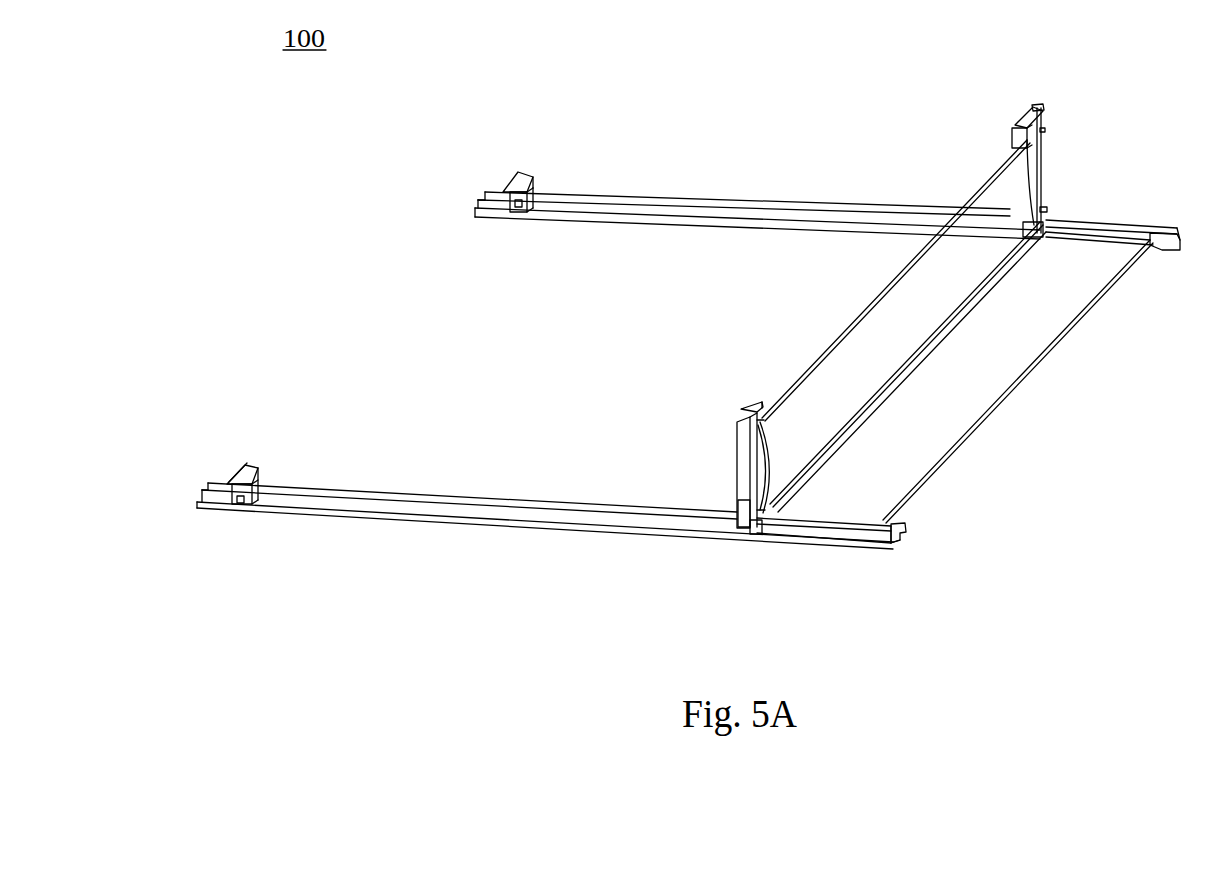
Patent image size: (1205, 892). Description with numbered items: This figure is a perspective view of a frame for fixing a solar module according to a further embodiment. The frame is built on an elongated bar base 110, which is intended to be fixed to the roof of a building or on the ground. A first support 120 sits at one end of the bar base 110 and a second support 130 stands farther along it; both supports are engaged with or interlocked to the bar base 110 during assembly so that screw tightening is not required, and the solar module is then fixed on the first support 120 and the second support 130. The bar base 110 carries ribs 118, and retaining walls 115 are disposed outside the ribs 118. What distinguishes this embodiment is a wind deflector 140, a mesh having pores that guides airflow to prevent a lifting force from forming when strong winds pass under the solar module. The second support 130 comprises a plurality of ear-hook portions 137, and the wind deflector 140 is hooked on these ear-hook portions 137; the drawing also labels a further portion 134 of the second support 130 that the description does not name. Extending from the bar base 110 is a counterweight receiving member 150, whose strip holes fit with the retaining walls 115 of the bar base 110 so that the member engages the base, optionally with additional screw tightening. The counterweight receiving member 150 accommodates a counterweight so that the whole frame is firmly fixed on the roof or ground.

The bar base 110 is at (478, 538).
The retaining walls 115 is at (906, 527).
The ribs 118 is at (874, 532).
The first support 120 is at (258, 458).
The second support 130 is at (720, 433).
The bracket lower portion 134 is at (747, 502).
The ear-hook portions 137 is at (757, 531).
The wind deflector 140 is at (875, 325).
The counterweight receiving member 150 is at (950, 410).